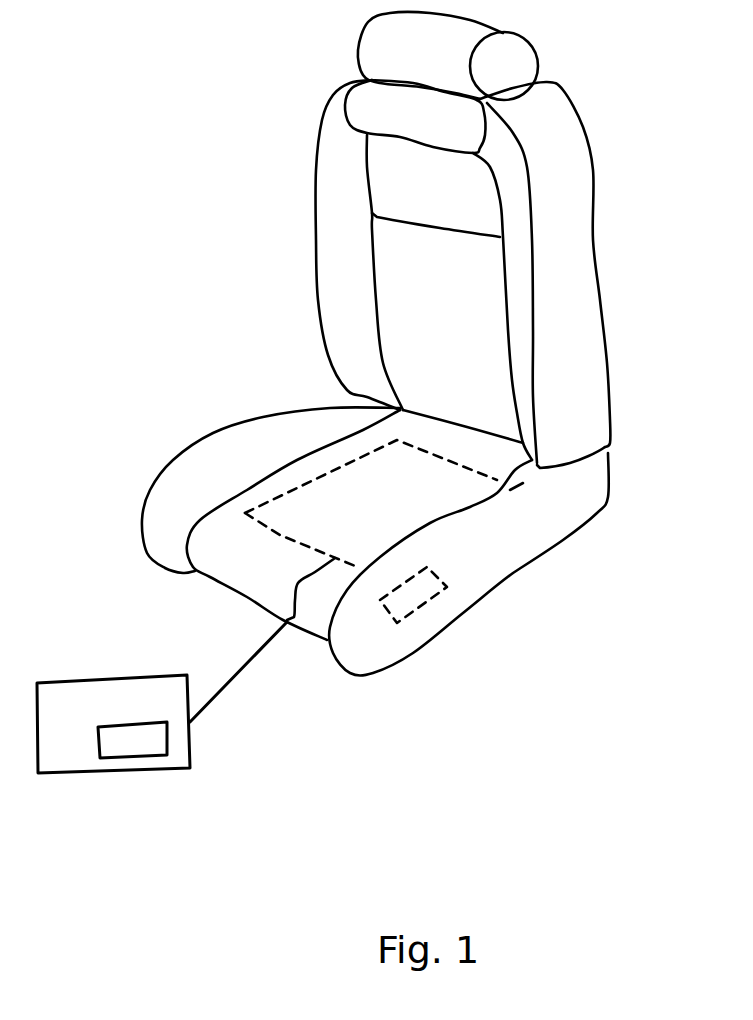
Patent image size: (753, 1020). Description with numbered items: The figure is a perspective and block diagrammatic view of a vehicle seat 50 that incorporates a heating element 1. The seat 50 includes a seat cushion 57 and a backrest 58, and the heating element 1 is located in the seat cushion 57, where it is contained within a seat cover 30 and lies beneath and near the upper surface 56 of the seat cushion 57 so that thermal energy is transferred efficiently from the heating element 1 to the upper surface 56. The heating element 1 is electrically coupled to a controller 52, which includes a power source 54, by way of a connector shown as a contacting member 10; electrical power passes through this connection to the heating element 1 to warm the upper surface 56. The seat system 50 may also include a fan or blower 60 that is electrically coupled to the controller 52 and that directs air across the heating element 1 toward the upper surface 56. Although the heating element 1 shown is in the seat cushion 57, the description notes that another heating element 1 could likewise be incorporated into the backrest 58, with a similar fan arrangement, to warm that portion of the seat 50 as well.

The heating element 1 is at (372, 457).
The contacting member 10 is at (297, 587).
The seat cover 30 is at (377, 540).
The vehicle seat 50 is at (585, 232).
The controller 52 is at (73, 755).
The power source 54 is at (148, 747).
The upper surface 56 is at (242, 500).
The seat cushion 57 is at (217, 568).
The backrest 58 is at (397, 313).
The fan or blower 60 is at (407, 607).